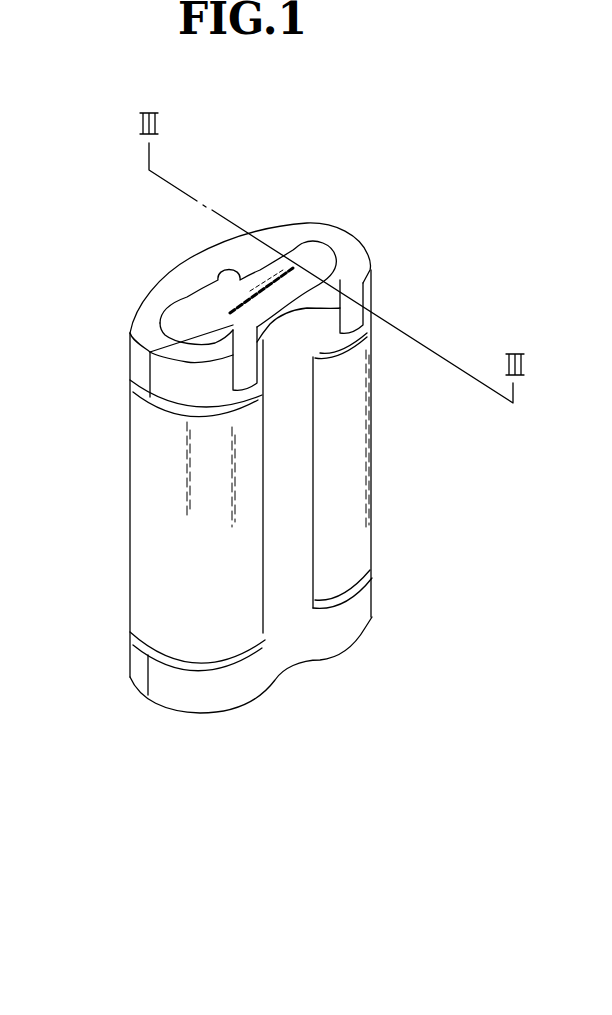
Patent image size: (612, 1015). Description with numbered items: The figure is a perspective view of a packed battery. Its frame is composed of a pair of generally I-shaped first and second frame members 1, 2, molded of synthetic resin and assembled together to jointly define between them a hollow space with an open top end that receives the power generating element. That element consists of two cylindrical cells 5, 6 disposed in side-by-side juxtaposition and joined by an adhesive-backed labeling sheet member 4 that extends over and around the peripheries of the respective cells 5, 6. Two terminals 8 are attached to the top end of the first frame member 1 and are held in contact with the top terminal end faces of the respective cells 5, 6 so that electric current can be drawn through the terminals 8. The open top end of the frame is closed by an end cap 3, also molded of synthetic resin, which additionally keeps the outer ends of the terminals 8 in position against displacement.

The first frame member 1 is at (358, 260).
The second frame member 2 is at (152, 307).
The end cap 3 is at (278, 267).
The labeling sheet member 4 is at (152, 502).
The cylindrical cell 5 is at (150, 573).
The cylindrical cell 6 is at (347, 502).
The terminal 8 is at (232, 345).